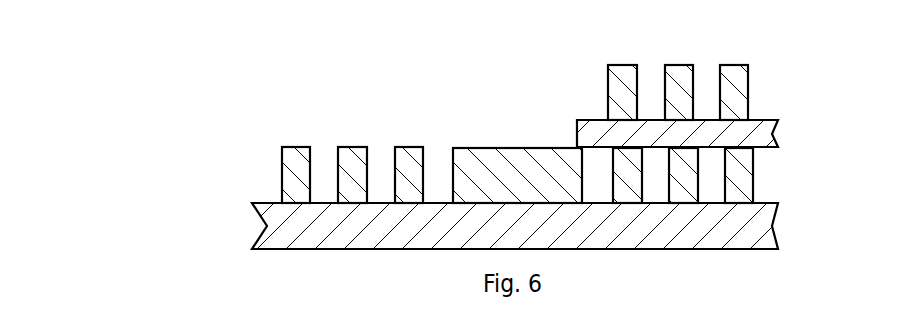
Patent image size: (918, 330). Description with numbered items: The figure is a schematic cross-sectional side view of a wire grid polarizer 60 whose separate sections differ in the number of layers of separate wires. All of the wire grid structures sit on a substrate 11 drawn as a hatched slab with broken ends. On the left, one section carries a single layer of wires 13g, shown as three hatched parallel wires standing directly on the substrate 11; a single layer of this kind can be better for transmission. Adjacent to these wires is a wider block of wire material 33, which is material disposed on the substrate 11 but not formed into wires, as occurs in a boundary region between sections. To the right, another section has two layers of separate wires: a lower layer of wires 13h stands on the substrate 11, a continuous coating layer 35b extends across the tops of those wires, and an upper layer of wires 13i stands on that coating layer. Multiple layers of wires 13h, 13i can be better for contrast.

The wire grid polarizer 60 is at (120, 197).
The substrate 11 is at (280, 237).
The single layer of wires 13g is at (289, 187).
The wire material 33 is at (535, 160).
The continuous coating layer 35b is at (758, 137).
The layer of separate wires 13i is at (618, 92).
The layer of separate wires 13h is at (742, 177).